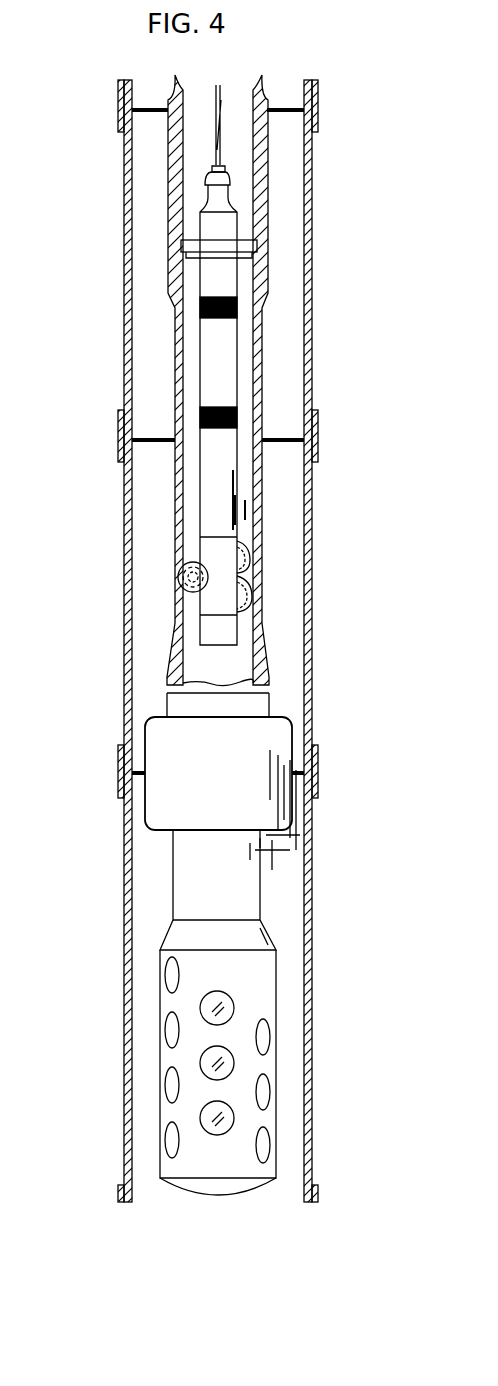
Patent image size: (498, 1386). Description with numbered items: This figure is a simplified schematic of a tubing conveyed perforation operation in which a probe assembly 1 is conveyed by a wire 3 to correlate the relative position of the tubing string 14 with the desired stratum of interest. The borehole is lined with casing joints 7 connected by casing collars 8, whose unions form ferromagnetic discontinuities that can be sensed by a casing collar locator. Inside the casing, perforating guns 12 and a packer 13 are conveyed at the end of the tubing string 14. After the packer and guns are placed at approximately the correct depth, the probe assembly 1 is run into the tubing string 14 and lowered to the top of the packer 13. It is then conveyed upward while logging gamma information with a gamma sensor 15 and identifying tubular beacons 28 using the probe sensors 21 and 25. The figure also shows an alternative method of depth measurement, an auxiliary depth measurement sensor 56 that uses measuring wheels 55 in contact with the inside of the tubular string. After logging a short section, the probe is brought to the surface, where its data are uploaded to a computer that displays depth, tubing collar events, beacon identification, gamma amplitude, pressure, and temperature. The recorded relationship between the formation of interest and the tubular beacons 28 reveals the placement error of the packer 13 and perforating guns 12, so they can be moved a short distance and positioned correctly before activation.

The probe assembly 1 is at (243, 367).
The wire 3 is at (222, 122).
The casing joints 7 is at (126, 1022).
The casing collar 8 is at (120, 758).
The perforating guns 12 is at (277, 1040).
The packer 13 is at (290, 745).
The tubing string 14 is at (262, 612).
The gamma sensor 15 is at (237, 490).
The probe sensor 21 is at (199, 300).
The probe sensor 25 is at (199, 418).
The tubular beacon 28 is at (258, 252).
The measuring wheels 55 is at (183, 568).
The auxiliary depth measurement sensor 56 is at (199, 612).